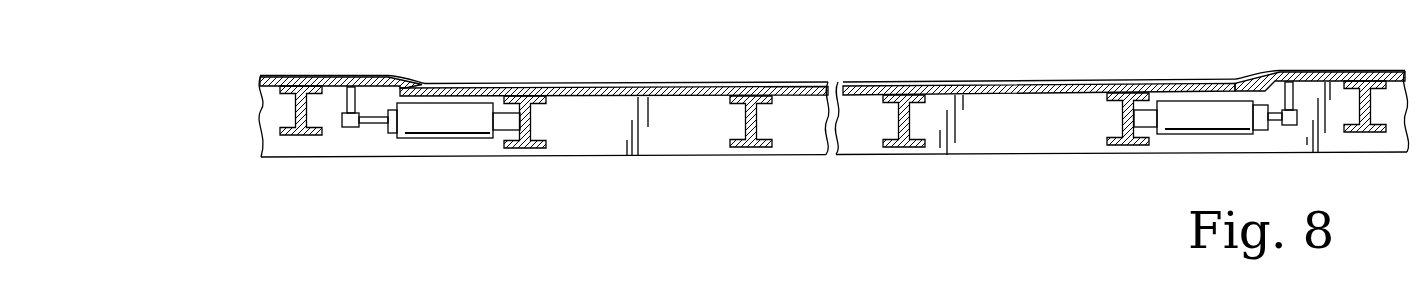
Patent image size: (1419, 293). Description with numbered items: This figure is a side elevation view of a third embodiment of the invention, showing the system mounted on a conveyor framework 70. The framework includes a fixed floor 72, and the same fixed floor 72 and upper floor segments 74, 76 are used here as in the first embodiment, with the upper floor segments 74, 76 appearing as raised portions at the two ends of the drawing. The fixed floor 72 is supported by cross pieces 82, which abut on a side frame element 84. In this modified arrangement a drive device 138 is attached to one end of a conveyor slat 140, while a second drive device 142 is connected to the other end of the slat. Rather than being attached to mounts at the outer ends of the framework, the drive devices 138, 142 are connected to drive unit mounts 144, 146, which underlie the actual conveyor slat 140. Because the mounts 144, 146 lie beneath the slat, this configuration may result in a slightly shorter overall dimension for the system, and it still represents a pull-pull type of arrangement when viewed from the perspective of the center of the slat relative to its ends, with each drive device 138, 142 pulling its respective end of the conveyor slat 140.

The conveyor framework 70 is at (677, 127).
The fixed floor 72 is at (970, 97).
The upper floor segment 74 is at (310, 78).
The upper floor segment 76 is at (1330, 70).
The cross piece 82 is at (762, 147).
The side frame element 84 is at (1057, 125).
The drive device 138 is at (450, 138).
The conveyor slat 140 is at (697, 82).
The second drive device 142 is at (1197, 135).
The drive unit mount 144 is at (531, 125).
The drive unit mount 146 is at (1117, 127).